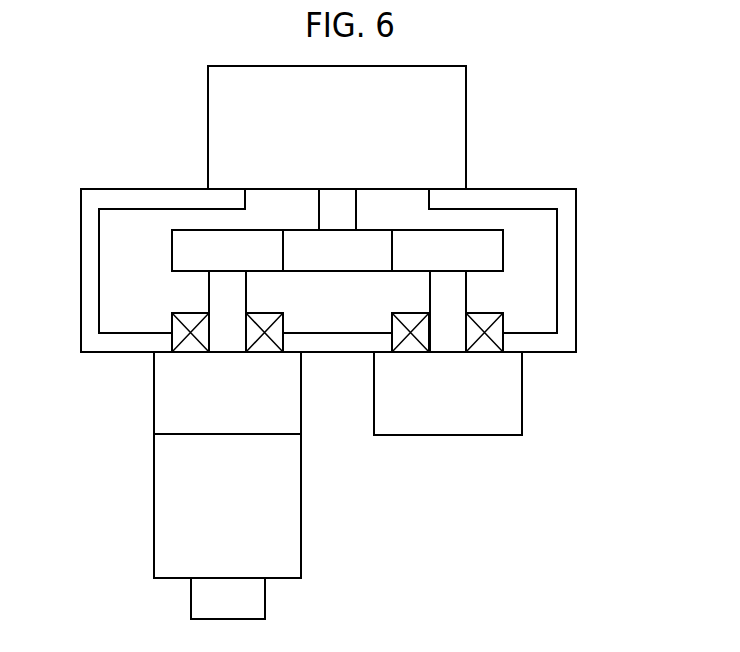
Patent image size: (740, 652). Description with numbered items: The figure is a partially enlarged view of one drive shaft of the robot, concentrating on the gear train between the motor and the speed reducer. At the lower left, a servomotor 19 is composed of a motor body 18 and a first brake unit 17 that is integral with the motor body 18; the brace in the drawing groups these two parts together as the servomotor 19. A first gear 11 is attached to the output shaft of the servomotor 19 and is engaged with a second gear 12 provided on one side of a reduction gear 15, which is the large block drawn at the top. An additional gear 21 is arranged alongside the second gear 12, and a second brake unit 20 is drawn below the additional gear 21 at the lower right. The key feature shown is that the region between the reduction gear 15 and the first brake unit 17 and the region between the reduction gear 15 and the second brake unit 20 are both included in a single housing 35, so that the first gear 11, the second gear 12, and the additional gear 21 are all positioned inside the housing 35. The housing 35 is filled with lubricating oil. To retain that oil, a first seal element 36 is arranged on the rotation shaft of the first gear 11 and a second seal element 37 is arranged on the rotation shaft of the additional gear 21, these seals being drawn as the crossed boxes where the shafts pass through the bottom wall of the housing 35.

The first gear 11 is at (185, 260).
The second gear 12 is at (338, 258).
The reduction gear 15 is at (447, 116).
The first brake unit 17 is at (173, 394).
The motor body 18 is at (175, 495).
The servomotor 19 is at (89, 393).
The second brake unit 20 is at (507, 418).
The additional gear 21 is at (492, 248).
The housing 35 is at (548, 198).
The first seal element 36 is at (278, 336).
The second seal element 37 is at (498, 338).